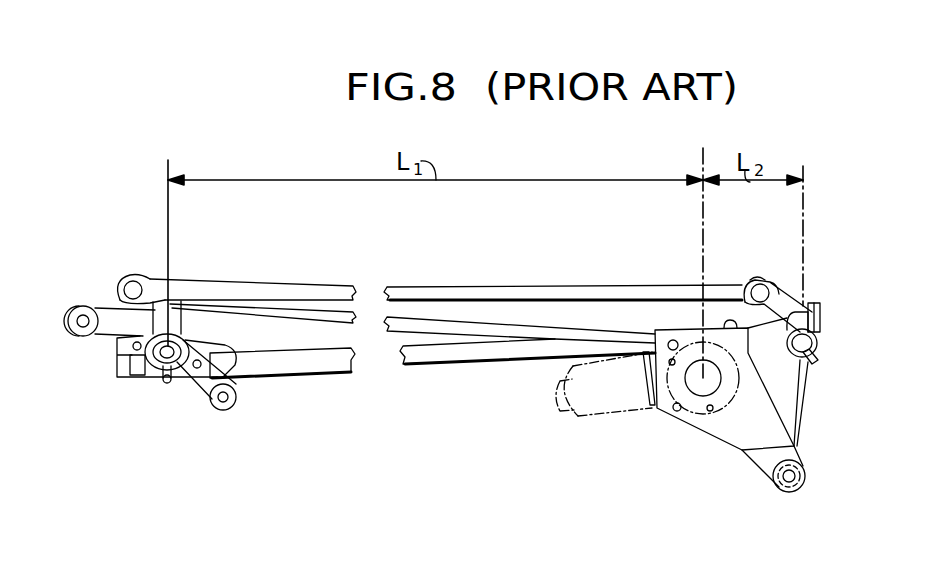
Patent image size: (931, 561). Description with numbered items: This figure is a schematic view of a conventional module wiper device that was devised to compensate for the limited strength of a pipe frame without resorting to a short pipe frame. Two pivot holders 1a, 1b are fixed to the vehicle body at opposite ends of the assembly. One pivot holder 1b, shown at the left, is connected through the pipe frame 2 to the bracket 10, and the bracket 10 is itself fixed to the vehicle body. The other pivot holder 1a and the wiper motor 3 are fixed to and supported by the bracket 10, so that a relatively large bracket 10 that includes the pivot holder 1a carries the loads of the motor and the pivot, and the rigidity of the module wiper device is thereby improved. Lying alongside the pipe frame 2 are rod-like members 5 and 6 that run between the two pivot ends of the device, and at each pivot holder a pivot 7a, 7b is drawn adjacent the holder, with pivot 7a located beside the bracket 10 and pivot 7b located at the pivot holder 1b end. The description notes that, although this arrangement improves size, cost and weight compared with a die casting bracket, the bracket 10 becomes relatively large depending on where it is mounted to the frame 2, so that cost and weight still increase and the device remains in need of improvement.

The pivot holder 1a is at (792, 313).
The pivot holder 1b is at (148, 378).
The pipe frame 2 is at (467, 347).
The wiper motor 3 is at (590, 397).
The connecting rod 5 is at (458, 293).
The link 6 is at (300, 312).
The crank arm pivot 7a is at (815, 366).
The crank arm pivot 7b is at (167, 385).
The bracket 10 is at (705, 423).